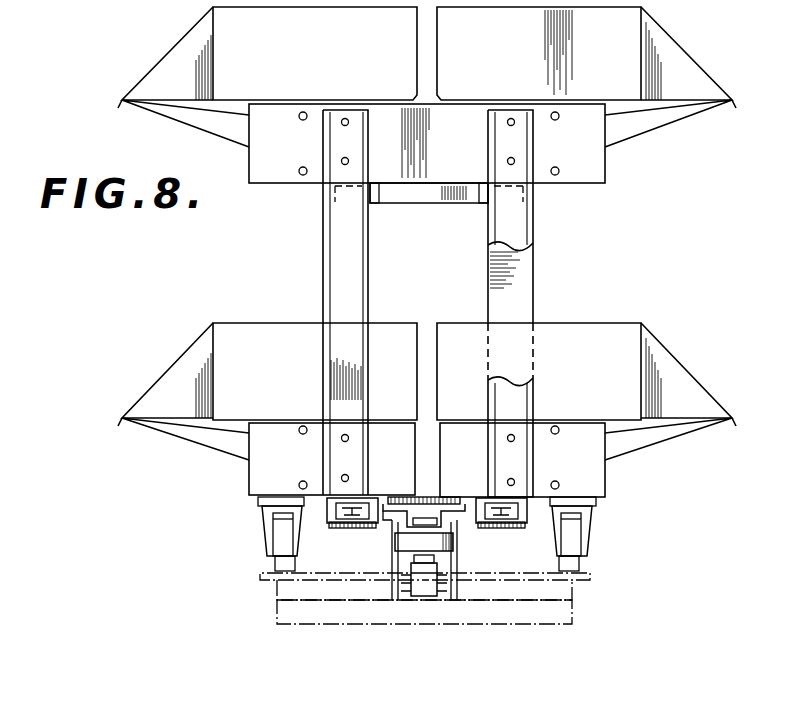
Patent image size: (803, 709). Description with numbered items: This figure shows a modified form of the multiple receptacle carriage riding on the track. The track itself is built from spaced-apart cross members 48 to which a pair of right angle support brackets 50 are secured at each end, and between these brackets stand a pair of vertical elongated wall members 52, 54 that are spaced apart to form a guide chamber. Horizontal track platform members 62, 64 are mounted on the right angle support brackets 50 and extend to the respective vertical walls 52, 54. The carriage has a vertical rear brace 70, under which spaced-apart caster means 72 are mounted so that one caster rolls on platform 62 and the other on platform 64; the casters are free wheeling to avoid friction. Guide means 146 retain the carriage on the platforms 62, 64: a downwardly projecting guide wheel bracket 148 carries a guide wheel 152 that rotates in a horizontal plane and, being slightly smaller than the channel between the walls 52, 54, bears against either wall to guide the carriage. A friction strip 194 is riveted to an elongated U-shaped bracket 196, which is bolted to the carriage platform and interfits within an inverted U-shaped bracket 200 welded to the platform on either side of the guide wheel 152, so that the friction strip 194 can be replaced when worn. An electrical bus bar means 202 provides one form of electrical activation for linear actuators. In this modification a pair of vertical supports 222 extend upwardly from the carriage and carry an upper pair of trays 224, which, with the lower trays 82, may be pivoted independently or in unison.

The cross members 48 is at (574, 620).
The right angle support brackets 50 is at (277, 583).
The vertical elongated wall member 52 is at (460, 563).
The vertical elongated wall member 54 is at (390, 558).
The horizontal track platform member 62 is at (592, 573).
The horizontal track platform member 64 is at (258, 571).
The vertical rear brace 70 is at (593, 487).
The caster means 72 is at (267, 537).
The lower tray 82 is at (427, 391).
The guide means 146 is at (450, 514).
The guide wheel bracket 148 is at (432, 484).
The guide wheel 152 is at (395, 538).
The friction strip 194 is at (340, 523).
The U-shaped bracket 196 is at (342, 507).
The inverted U-shaped bracket 200 is at (530, 508).
The electrical bus bar means 202 is at (395, 582).
The vertical supports 222 is at (334, 248).
The upper trays 224 is at (427, 77).